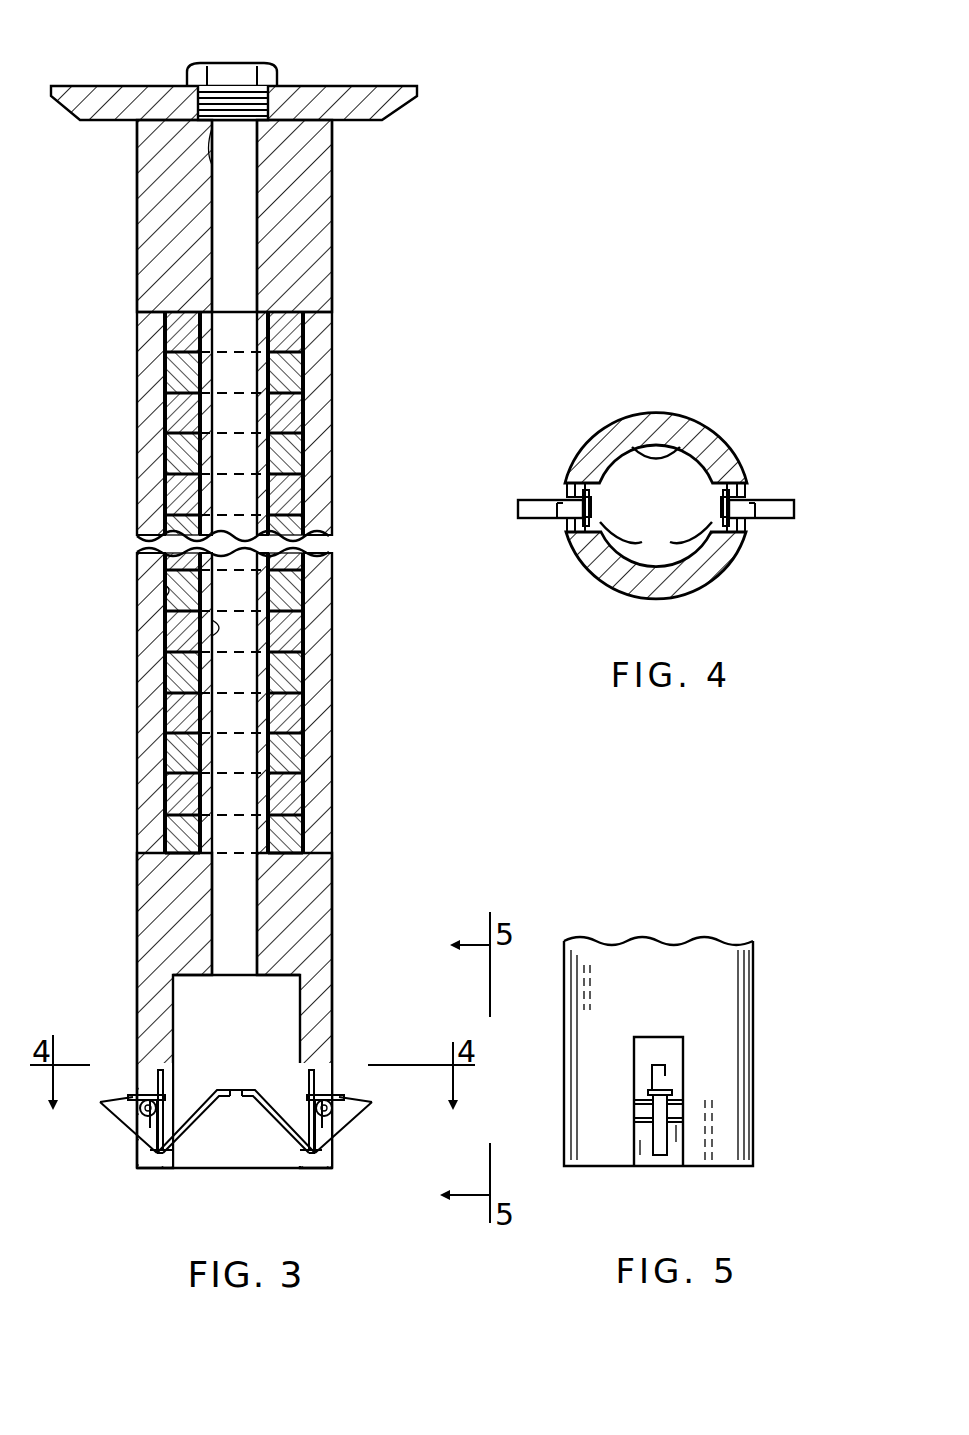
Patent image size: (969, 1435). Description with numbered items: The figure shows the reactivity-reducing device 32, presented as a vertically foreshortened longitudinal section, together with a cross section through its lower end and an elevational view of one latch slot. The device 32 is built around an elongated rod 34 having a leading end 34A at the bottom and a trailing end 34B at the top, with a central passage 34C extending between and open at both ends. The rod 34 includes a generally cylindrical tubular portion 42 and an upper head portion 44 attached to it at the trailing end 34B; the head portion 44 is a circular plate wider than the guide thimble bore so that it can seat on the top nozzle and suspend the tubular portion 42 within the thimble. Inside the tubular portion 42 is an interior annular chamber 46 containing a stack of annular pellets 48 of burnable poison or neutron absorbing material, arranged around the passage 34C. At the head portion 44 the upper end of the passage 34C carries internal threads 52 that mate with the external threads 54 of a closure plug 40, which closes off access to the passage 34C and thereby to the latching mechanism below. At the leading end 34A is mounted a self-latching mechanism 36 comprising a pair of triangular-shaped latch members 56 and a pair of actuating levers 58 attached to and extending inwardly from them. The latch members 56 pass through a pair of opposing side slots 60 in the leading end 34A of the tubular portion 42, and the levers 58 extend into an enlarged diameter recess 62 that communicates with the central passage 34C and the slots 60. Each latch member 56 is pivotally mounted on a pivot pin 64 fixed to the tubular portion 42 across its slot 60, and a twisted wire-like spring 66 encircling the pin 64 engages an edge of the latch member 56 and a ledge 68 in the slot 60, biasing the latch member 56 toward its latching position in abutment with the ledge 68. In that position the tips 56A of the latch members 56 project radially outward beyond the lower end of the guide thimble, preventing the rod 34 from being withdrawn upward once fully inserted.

In FIG. 3, the reactivity-reducing device 32 is at (448, 66).
In FIG. 4, the reactivity-reducing device 32 is at (727, 340).
In FIG. 3, the elongated rod 34 is at (337, 323).
In FIG. 3, the leading end 34A is at (289, 1071).
In FIG. 5, the leading end 34A is at (753, 968).
In FIG. 3, the trailing end 34B is at (333, 167).
In FIG. 3, the central passage 34C is at (212, 628).
In FIG. 3, the self-latching mechanism 36 is at (195, 1140).
In FIG. 4, the self-latching mechanism 36 is at (561, 536).
In FIG. 5, the self-latching mechanism 36 is at (620, 1075).
In FIG. 3, the closure plug 40 is at (200, 70).
In FIG. 3, the tubular portion 42 is at (137, 462).
In FIG. 3, the upper head portion 44 is at (125, 84).
In FIG. 3, the interior annular chamber 46 is at (168, 592).
In FIG. 3, the annular pellets 48 is at (303, 405).
In FIG. 3, the internal threads 52 is at (212, 140).
In FIG. 3, the external threads 54 is at (242, 95).
In FIG. 3, the latch members 56 is at (140, 1117).
In FIG. 4, the latch members 56 is at (552, 518).
In FIG. 5, the latch members 56 is at (655, 1133).
In FIG. 3, the tips 56A is at (127, 1105).
In FIG. 4, the tips 56A is at (522, 506).
In FIG. 5, the tips 56A is at (665, 1084).
In FIG. 3, the actuating levers 58 is at (234, 1094).
In FIG. 3, the side slots 60 is at (152, 1168).
In FIG. 4, the side slots 60 is at (656, 540).
In FIG. 5, the side slots 60 is at (640, 1148).
In FIG. 3, the enlarged diameter recess 62 is at (275, 1140).
In FIG. 4, the enlarged diameter recess 62 is at (675, 447).
In FIG. 3, the pivot pins 64 is at (150, 1128).
In FIG. 4, the pivot pins 64 is at (583, 495).
In FIG. 5, the pivot pins 64 is at (676, 1142).
In FIG. 3, the springs 66 is at (158, 1090).
In FIG. 4, the springs 66 is at (585, 505).
In FIG. 5, the springs 66 is at (660, 1063).
In FIG. 3, the ledges 68 is at (145, 1118).
In FIG. 4, the ledges 68 is at (570, 483).
In FIG. 5, the ledges 68 is at (673, 1052).